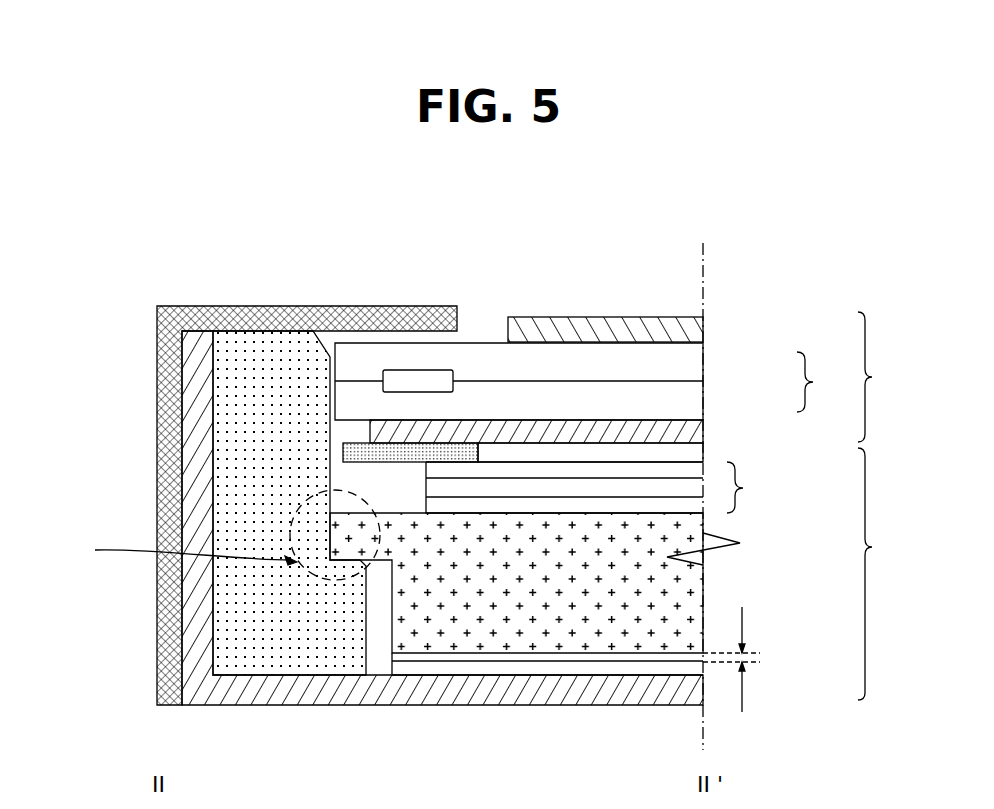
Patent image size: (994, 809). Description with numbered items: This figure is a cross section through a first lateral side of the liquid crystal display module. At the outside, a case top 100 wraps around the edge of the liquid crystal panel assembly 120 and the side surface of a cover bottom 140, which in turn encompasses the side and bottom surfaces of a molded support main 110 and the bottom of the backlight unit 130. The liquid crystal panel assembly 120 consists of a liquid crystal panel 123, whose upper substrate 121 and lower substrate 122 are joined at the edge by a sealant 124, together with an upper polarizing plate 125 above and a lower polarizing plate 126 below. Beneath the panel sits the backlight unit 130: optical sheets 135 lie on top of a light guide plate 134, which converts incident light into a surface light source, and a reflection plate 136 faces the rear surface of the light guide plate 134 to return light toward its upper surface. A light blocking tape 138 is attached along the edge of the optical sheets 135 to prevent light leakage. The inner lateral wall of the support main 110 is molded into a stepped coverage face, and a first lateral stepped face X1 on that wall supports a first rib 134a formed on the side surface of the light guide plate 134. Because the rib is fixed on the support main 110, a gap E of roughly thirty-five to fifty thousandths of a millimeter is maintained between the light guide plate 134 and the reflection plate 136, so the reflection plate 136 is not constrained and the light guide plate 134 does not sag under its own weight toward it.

The case top 100 is at (168, 352).
The support main 110 is at (237, 398).
The liquid crystal panel assembly 120 is at (890, 377).
The upper substrate 121 is at (693, 354).
The lower substrate 122 is at (693, 400).
The liquid crystal panel 123 is at (825, 382).
The sealant 124 is at (453, 371).
The upper polarizing plate 125 is at (700, 327).
The lower polarizing plate 126 is at (695, 437).
The backlight unit 130 is at (700, 571).
The light guide plate 134 is at (693, 578).
The first rib 134a is at (350, 530).
The optical sheets 135 is at (605, 487).
The reflection plate 136 is at (625, 668).
The light blocking tape 138 is at (345, 455).
The cover bottom 140 is at (453, 690).
The first lateral stepped face X1 is at (178, 554).
The gap E is at (733, 659).